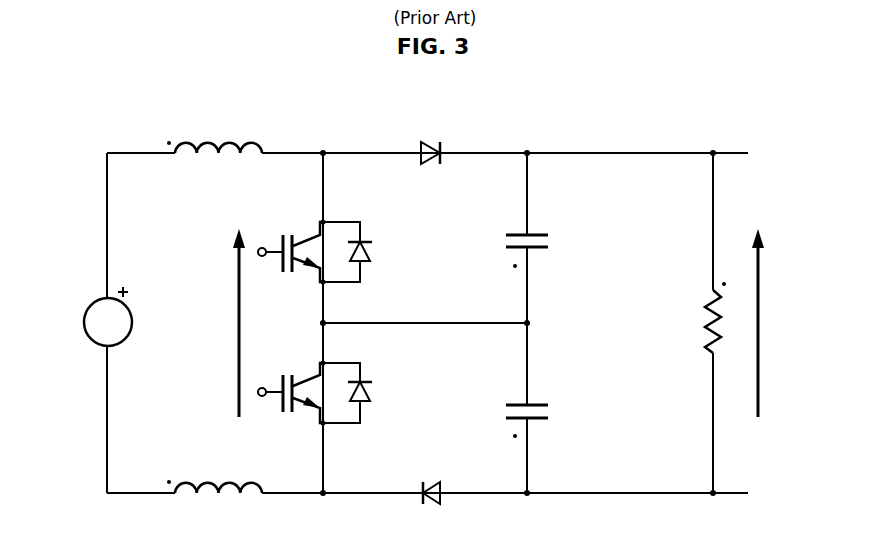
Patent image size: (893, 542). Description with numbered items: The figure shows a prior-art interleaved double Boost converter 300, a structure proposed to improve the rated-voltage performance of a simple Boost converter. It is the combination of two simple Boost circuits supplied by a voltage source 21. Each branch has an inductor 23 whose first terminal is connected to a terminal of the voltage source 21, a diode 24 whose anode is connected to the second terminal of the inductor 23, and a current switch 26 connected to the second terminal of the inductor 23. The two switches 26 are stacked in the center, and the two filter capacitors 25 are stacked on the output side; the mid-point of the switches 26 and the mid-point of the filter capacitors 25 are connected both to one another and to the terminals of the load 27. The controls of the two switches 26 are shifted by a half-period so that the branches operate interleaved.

The interleaved double Boost converter 300 is at (134, 80).
The voltage source 21 is at (84, 320).
The inductor 23 is at (218, 146).
The diode 24 is at (421, 148).
The filter capacitor 25 is at (536, 235).
The current switch 26 is at (383, 216).
The load 27 is at (704, 326).